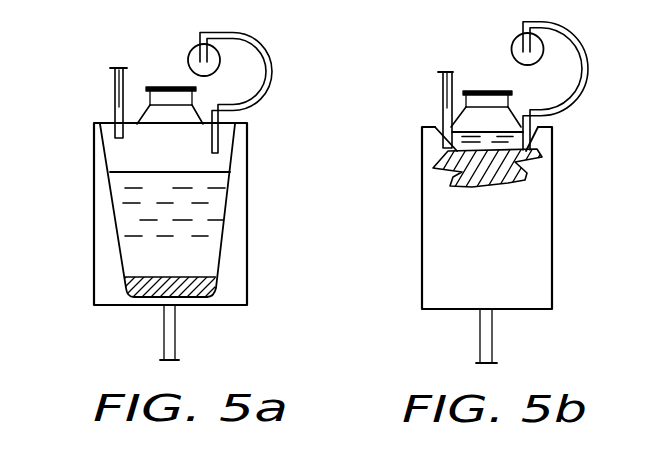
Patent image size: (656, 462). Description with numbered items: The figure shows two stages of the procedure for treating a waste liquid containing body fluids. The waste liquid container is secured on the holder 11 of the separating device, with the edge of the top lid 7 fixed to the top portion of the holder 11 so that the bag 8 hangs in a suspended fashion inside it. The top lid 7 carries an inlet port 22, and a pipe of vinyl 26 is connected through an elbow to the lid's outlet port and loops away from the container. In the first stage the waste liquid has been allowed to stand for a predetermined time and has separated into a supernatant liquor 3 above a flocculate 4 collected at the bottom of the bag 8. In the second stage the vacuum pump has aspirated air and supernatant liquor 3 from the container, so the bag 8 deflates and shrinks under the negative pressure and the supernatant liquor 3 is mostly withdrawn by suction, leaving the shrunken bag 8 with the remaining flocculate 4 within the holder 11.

In FIG. 5a, the supernatant liquor 3 is at (127, 188).
In FIG. 5a, the flocculate 4 is at (128, 290).
In FIG. 5a, the top lid 7 is at (247, 125).
In FIG. 5b, the top lid 7 is at (548, 126).
In FIG. 5a, the bag 8 is at (227, 198).
In FIG. 5b, the bag 8 is at (525, 178).
In FIG. 5a, the holder 11 is at (247, 253).
In FIG. 5b, the holder 11 is at (552, 257).
In FIG. 5a, the inlet port 22 is at (117, 117).
In FIG. 5a, the pipe of vinyl 26 is at (263, 42).